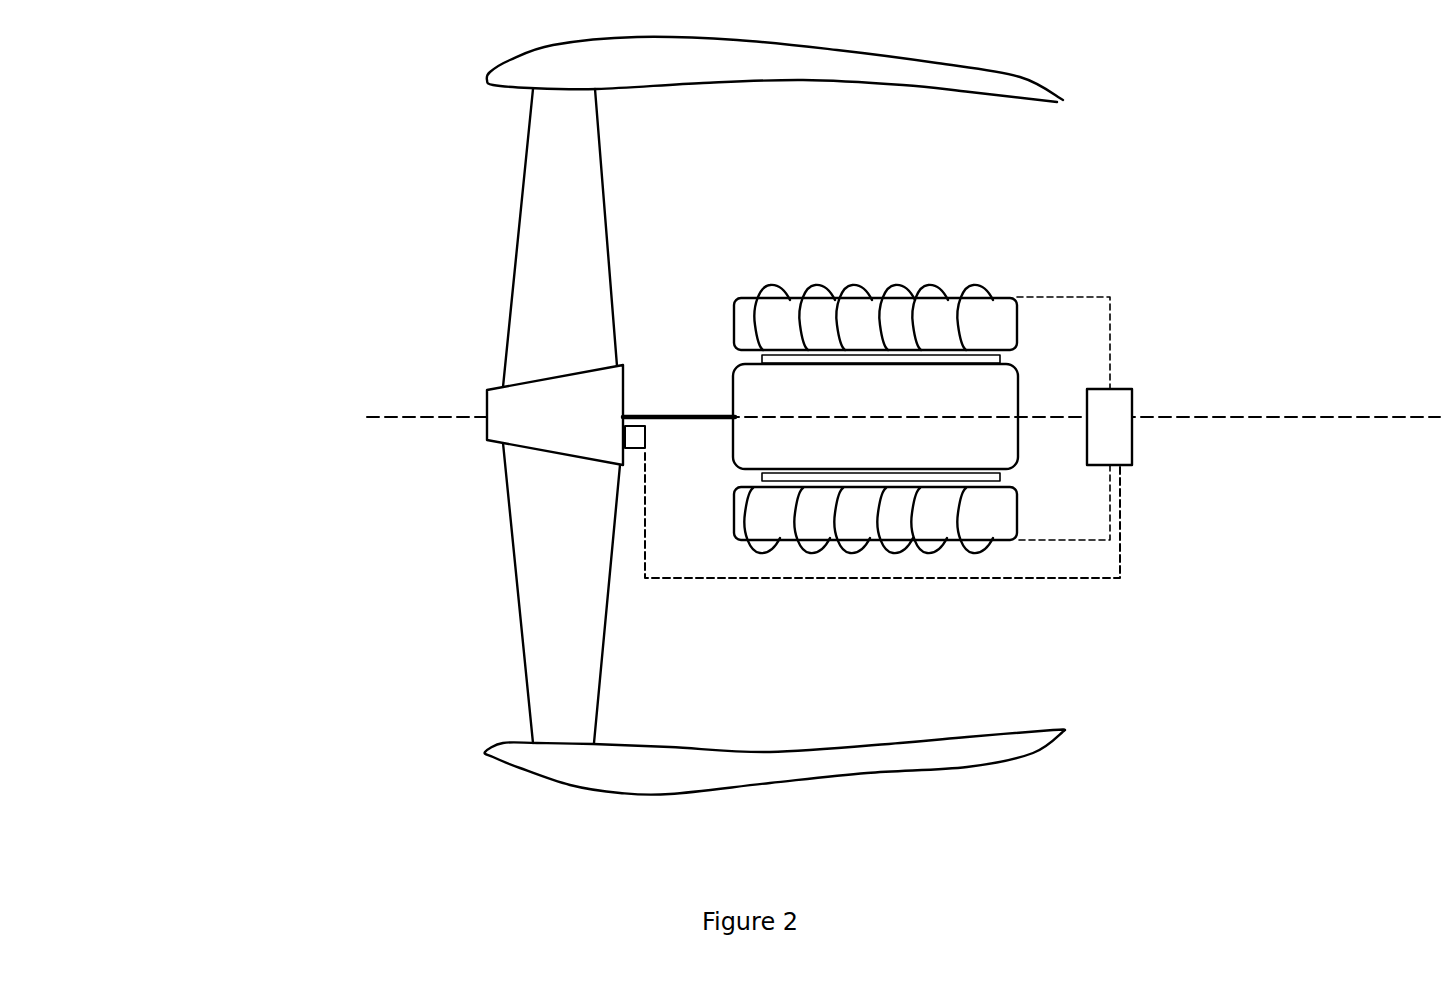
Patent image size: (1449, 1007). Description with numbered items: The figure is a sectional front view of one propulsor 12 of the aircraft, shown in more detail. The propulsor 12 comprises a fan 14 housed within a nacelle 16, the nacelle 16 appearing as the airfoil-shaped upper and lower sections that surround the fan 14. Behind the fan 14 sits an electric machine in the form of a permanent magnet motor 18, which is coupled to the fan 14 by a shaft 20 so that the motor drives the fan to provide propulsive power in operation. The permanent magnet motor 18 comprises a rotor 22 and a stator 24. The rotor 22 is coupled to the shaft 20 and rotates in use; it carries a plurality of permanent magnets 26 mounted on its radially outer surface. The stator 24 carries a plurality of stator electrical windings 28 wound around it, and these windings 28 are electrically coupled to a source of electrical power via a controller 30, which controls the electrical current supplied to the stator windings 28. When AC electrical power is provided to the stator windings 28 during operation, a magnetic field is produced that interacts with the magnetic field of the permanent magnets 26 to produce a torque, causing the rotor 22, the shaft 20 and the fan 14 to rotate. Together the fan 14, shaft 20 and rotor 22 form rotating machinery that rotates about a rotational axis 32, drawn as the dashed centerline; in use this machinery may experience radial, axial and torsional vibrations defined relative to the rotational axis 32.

The propulsor 12 is at (280, 186).
The fan 14 is at (516, 297).
The nacelle 16 is at (940, 90).
The permanent magnet motor 18 is at (1017, 458).
The shaft 20 is at (660, 415).
The rotor 22 is at (1013, 452).
The stator 24 is at (1020, 297).
The permanent magnets 26 is at (778, 543).
The stator electrical windings 28 is at (853, 287).
The controller 30 is at (1132, 427).
The rotational axis 32 is at (381, 417).